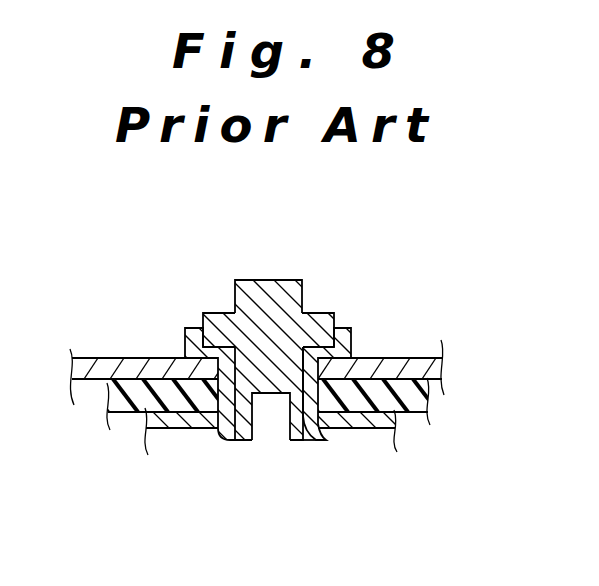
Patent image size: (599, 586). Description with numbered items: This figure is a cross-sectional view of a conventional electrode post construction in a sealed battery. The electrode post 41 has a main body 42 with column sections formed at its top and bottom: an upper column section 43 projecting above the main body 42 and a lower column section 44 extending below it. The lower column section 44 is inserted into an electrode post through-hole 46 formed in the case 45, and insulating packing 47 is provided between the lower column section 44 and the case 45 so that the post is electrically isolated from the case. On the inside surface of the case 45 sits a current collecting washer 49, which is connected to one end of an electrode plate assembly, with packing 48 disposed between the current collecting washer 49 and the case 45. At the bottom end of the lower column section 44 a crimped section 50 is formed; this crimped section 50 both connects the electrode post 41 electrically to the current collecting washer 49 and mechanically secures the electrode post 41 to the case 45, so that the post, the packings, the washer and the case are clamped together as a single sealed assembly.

The electrode post 41 is at (259, 364).
The main body 42 is at (327, 318).
The upper column section 43 is at (270, 298).
The lower column section 44 is at (278, 368).
The case 45 is at (100, 372).
The electrode post through-hole 46 is at (197, 352).
The insulating packing 47 is at (350, 340).
The packing 48 is at (427, 400).
The current collecting washer 49 is at (177, 425).
The crimped section 50 is at (312, 440).